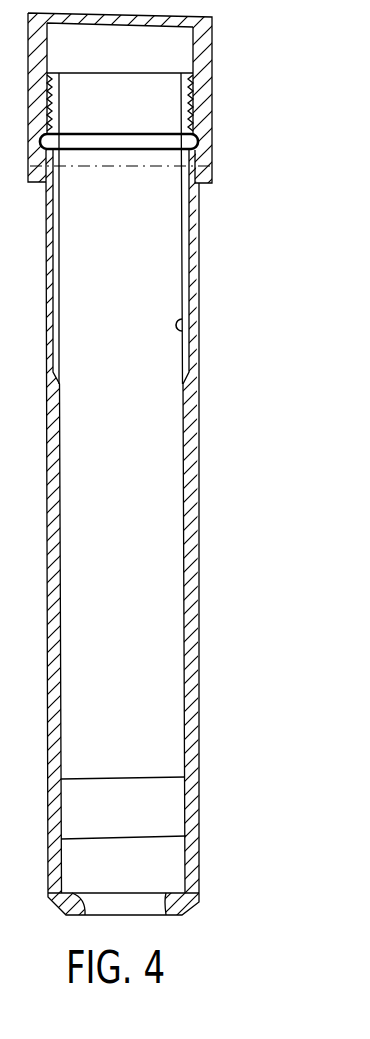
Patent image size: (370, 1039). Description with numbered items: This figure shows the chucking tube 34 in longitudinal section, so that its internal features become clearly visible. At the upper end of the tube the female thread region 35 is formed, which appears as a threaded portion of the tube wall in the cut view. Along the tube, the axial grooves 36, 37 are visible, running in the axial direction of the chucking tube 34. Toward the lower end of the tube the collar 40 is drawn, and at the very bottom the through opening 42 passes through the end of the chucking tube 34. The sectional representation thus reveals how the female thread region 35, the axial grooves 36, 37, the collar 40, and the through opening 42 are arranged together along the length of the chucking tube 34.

The chucking tube 34 is at (225, 124).
The female thread region 35 is at (52, 100).
The axial groove 36 is at (182, 333).
The axial groove 37 is at (59, 316).
The collar 40 is at (76, 887).
The through opening 42 is at (88, 912).